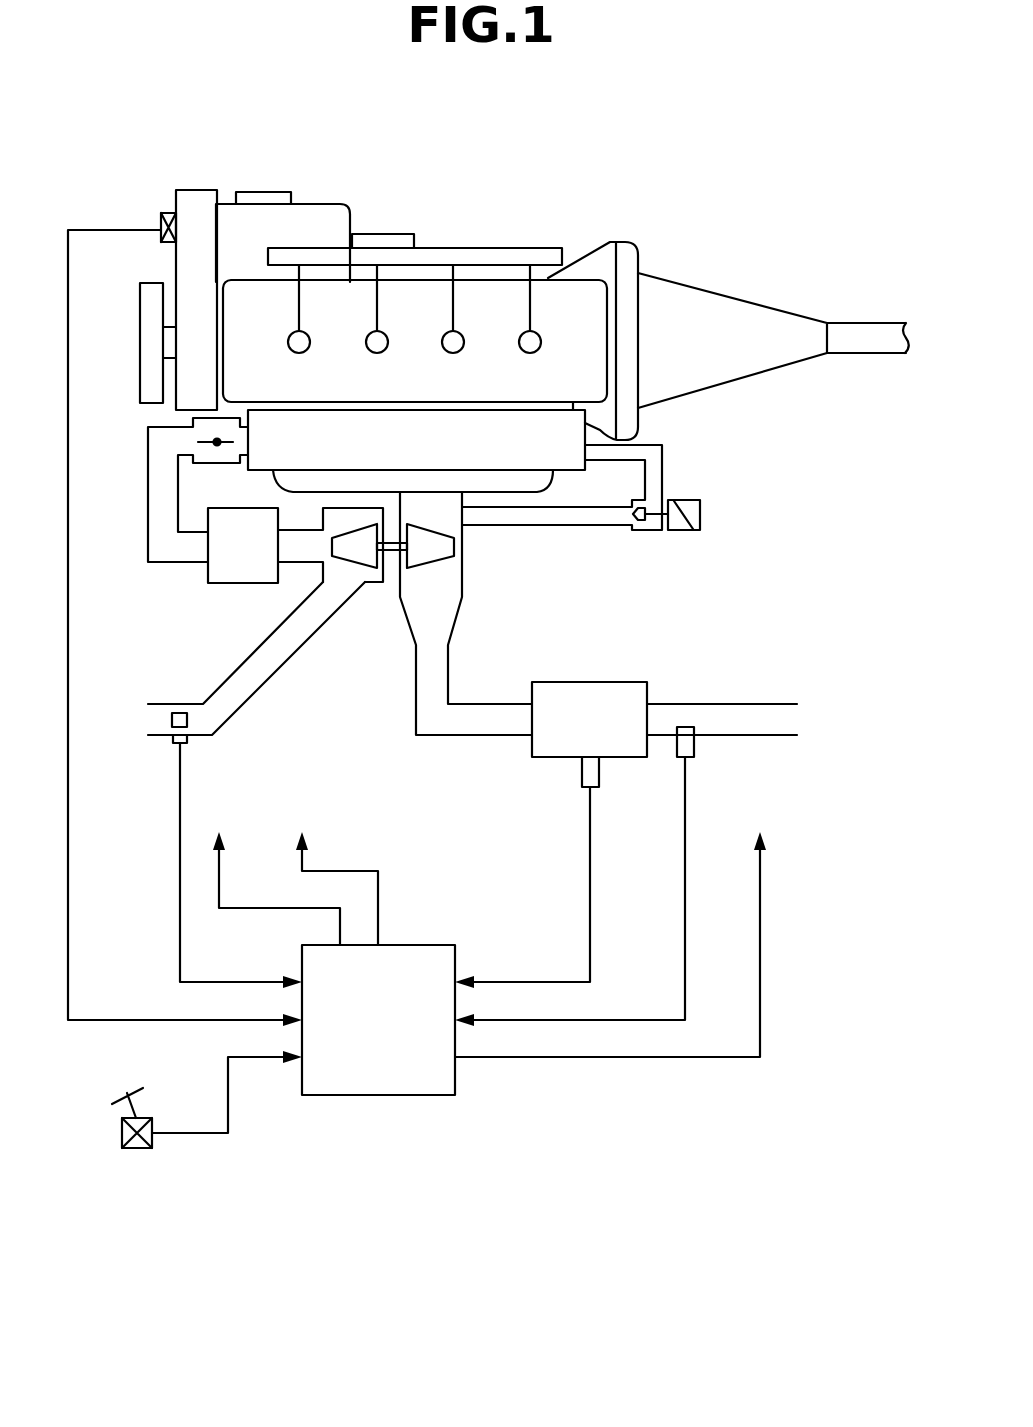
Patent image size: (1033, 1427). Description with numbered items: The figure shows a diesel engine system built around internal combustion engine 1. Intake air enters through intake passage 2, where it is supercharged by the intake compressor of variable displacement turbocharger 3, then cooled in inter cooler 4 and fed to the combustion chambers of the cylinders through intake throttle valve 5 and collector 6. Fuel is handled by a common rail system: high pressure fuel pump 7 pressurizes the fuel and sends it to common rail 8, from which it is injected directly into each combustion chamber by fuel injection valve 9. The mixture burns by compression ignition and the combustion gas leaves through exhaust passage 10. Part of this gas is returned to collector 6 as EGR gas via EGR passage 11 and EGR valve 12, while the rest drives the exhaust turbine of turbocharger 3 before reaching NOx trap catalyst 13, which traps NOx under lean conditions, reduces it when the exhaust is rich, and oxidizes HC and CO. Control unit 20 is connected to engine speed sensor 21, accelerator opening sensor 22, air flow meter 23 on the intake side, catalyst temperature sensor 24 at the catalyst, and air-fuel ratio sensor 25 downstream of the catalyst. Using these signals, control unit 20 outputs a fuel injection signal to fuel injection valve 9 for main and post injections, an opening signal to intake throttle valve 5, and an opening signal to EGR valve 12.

The internal combustion engine 1 is at (631, 216).
The intake passage 2 is at (307, 645).
The variable displacement turbocharger 3 is at (367, 568).
The inter cooler 4 is at (240, 583).
The intake throttle valve 5 is at (215, 448).
The collector 6 is at (270, 457).
The high pressure fuel pump 7 is at (317, 203).
The common rail 8 is at (455, 248).
The fuel injection valve 9 is at (310, 349).
The exhaust passage 10 is at (440, 619).
The EGR passage 11 is at (600, 525).
The EGR valve 12 is at (693, 500).
The NOx trap catalyst 13 is at (611, 682).
The control unit 20 is at (378, 1095).
The engine speed sensor 21 is at (158, 222).
The accelerator opening sensor 22 is at (135, 1148).
The air flow meter 23 is at (177, 745).
The catalyst temperature sensor 24 is at (581, 772).
The air-fuel ratio sensor 25 is at (675, 753).